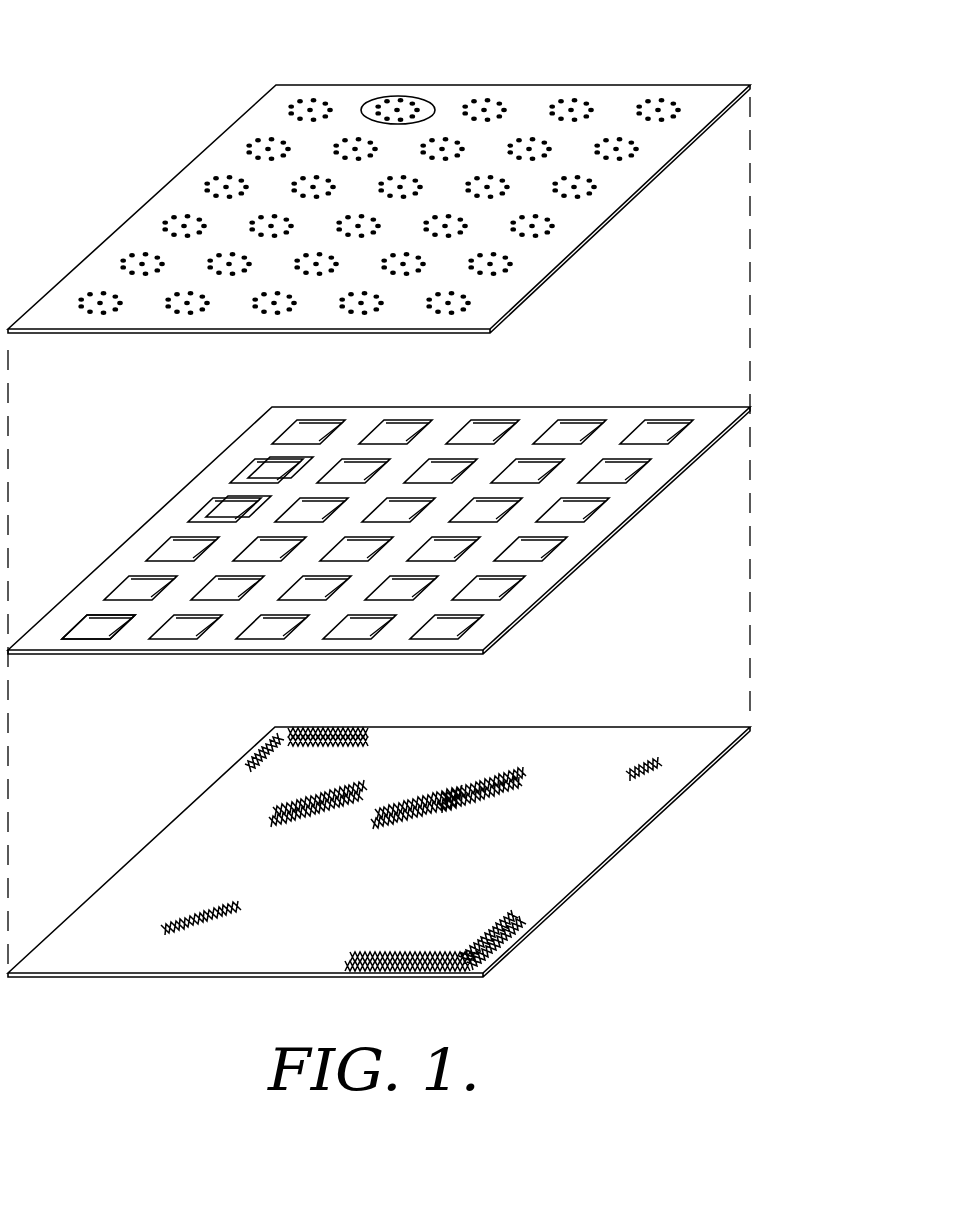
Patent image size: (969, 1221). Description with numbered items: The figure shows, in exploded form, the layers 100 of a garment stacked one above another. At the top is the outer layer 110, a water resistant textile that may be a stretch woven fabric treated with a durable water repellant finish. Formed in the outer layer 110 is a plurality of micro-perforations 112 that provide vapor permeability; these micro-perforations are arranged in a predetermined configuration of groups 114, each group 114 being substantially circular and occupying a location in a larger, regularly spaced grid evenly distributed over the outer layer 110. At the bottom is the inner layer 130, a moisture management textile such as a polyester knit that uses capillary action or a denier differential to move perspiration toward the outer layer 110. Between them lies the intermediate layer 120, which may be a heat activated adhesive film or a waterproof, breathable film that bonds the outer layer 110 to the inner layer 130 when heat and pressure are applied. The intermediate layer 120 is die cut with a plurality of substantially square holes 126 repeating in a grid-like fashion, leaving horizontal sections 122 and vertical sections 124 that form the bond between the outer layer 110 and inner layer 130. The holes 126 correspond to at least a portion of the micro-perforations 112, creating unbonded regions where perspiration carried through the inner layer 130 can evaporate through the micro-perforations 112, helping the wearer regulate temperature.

The layers 100 is at (793, 78).
The outer layer 110 is at (184, 178).
The micro-perforations 112 is at (655, 102).
The groups of micro-perforations 114 is at (404, 98).
The intermediate layer 120 is at (158, 525).
The horizontal sections 122 is at (318, 415).
The vertical sections 124 is at (130, 633).
The holes 126 is at (208, 508).
The inner layer 130 is at (160, 852).